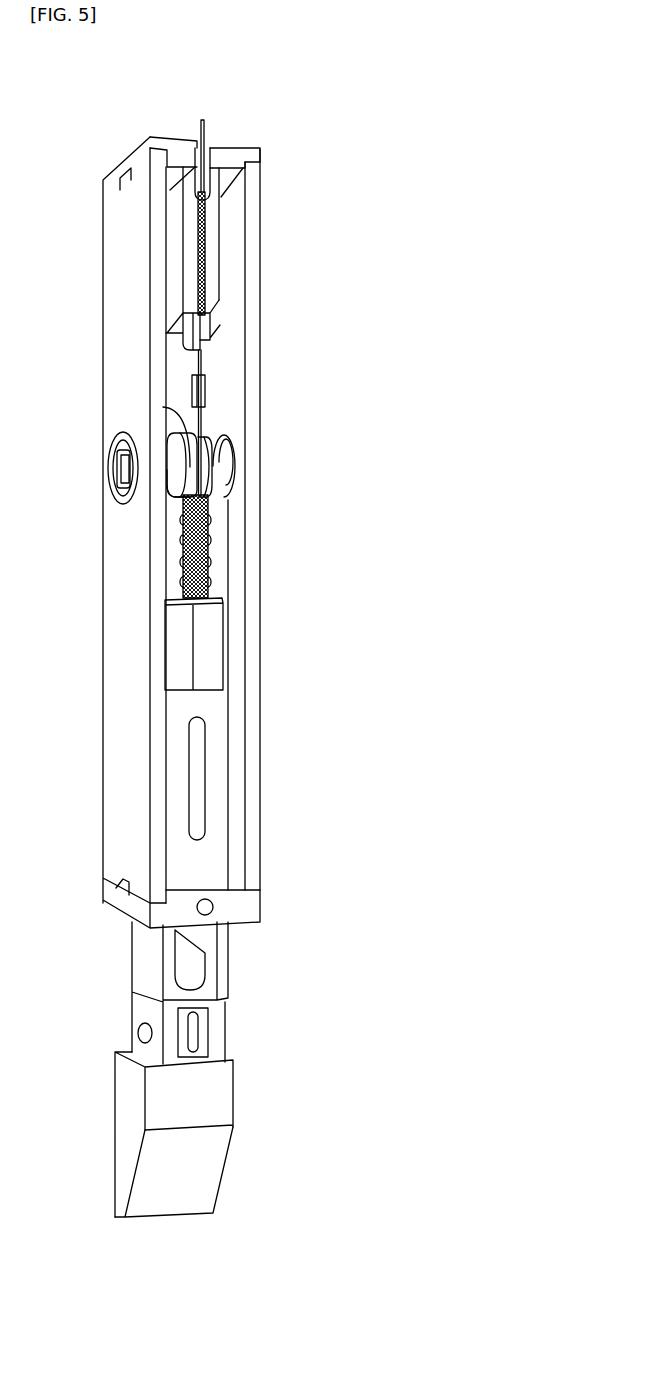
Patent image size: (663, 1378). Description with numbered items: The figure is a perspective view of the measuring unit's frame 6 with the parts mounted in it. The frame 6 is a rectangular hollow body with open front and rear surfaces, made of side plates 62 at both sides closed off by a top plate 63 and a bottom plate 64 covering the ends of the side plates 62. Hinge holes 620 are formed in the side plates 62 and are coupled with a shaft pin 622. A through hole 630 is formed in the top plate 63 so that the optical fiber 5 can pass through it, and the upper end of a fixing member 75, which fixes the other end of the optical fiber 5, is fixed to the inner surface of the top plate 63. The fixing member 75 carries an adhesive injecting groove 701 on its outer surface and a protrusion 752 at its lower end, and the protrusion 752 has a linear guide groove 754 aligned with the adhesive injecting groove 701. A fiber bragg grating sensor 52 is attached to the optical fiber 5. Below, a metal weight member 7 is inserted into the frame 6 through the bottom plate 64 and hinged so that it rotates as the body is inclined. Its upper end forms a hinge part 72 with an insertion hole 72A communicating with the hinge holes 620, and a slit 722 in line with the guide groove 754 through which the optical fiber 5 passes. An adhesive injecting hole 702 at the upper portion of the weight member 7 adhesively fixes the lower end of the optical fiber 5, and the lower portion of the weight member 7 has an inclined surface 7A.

The frame 6 is at (197, 657).
The side plates 62 is at (118, 245).
The top plate 63 is at (238, 150).
The through hole 630 is at (196, 152).
The bottom plate 64 is at (252, 912).
The fixing member 75 is at (221, 223).
The adhesive injecting groove 701 is at (208, 263).
The adhesive injecting hole 702 is at (209, 553).
The protrusion 752 is at (184, 340).
The guide groove 754 is at (206, 332).
The optical fiber 5 is at (201, 416).
The fiber bragg grating sensor 52 is at (206, 384).
The hinge part 72 is at (204, 465).
The slit 722 is at (164, 407).
The insertion hole 72A is at (177, 492).
The hinge holes 620 is at (112, 492).
The shaft pin 622 is at (119, 467).
The weight member 7 is at (215, 1095).
The inclined surface 7A is at (213, 1170).